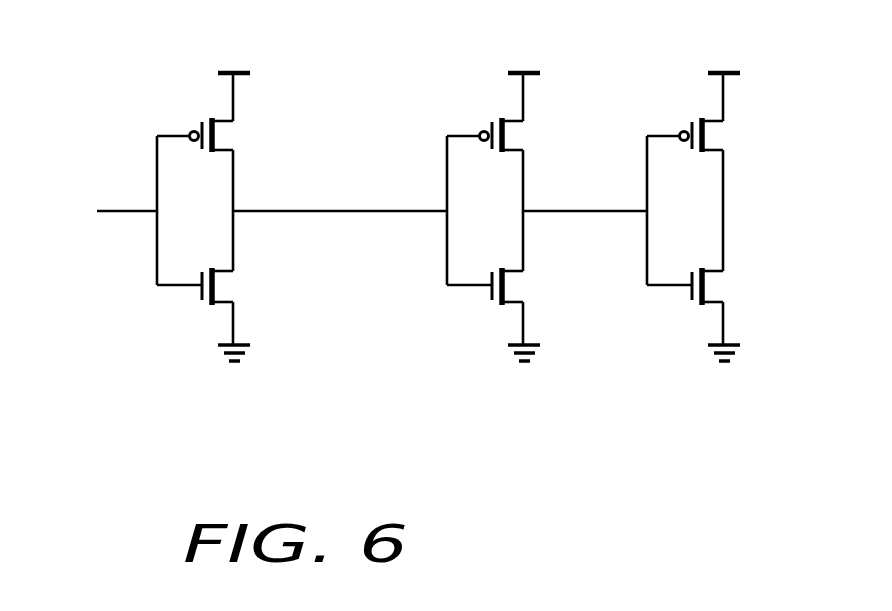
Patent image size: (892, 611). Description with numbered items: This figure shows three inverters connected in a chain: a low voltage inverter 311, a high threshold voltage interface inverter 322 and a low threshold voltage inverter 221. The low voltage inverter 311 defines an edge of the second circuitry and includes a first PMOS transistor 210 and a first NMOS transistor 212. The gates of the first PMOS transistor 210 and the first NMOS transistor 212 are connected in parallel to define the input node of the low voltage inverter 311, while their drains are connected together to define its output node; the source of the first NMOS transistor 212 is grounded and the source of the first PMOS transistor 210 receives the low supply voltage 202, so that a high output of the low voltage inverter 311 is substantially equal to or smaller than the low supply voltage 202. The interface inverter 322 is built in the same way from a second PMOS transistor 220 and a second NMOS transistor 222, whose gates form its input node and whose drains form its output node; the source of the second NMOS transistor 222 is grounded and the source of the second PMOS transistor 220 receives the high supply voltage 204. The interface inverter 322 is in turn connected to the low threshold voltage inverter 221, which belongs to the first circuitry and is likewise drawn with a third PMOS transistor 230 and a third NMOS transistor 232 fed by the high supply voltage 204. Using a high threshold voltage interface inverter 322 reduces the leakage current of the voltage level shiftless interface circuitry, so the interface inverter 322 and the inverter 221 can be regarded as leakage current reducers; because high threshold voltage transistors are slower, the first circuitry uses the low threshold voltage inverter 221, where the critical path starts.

The V_L 202 is at (232, 77).
The V_H 204 is at (621, 77).
The PMOS transistor P1 210 is at (219, 134).
The NMOS transistor N1 212 is at (219, 286).
The PMOS transistor P2 220 is at (514, 134).
The NMOS transistor N2 222 is at (514, 286).
The PMOS transistor P3 230 is at (713, 134).
The NMOS transistor N3 232 is at (713, 286).
The low voltage inverter 311 is at (219, 243).
The high threshold voltage interface inverter 322 is at (596, 243).
The low threshold voltage inverter 221 is at (708, 293).